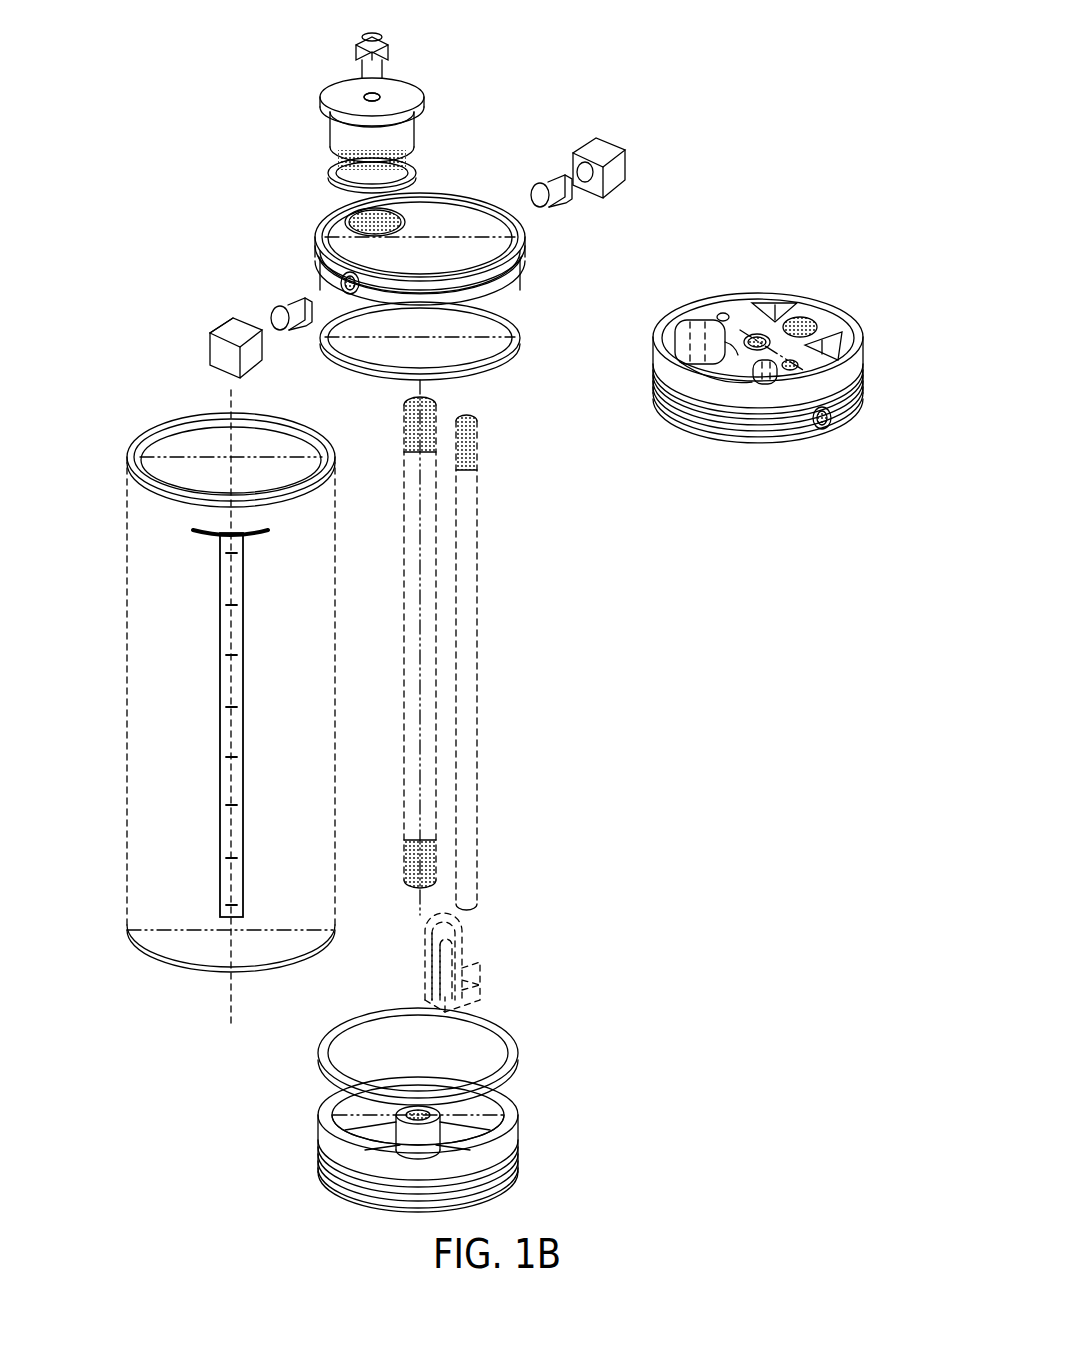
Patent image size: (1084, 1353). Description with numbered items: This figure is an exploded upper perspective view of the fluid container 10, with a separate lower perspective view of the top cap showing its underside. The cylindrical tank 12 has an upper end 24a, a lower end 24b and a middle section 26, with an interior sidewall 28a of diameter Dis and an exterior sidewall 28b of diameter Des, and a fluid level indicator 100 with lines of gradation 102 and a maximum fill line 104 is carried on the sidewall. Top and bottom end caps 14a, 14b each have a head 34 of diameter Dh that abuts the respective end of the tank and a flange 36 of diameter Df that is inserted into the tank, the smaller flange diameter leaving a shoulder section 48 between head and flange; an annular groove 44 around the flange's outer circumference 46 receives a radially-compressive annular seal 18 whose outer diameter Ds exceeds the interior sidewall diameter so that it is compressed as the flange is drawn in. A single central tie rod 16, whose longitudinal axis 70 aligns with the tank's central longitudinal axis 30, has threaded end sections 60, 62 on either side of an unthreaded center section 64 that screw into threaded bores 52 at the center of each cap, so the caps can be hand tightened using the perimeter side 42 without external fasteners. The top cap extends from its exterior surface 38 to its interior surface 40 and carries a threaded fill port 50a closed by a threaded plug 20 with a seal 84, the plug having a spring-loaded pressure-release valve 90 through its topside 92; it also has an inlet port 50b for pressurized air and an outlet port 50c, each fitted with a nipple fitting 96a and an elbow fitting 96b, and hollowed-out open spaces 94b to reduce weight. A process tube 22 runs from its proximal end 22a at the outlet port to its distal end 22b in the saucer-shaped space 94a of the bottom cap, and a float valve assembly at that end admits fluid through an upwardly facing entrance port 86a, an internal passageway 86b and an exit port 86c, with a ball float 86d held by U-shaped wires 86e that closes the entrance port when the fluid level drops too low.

The fluid container 10 is at (138, 42).
The cylindrical tank 12 is at (152, 630).
The top end cap 14a is at (473, 205).
The bottom end cap 14b is at (505, 1165).
The tie rod 16 is at (436, 665).
The annular seal 18 is at (502, 355).
The threaded plug 20 is at (402, 95).
The process tube 22 is at (467, 690).
The proximal end of process tube 22a is at (463, 443).
The distal end of process tube 22b is at (475, 898).
The upper end of tank 24a is at (200, 500).
The lower end of tank 24b is at (270, 952).
The middle section of tank 26 is at (200, 680).
The interior sidewall of tank 28a is at (175, 440).
The exterior sidewall of tank 28b is at (178, 850).
The central longitudinal axis 30 is at (230, 443).
The head 34 is at (488, 248).
The flange 36 is at (498, 300).
The exterior surface of top cap 38 is at (432, 208).
The interior surface of top cap 40 is at (727, 345).
The perimeter side 42 is at (505, 275).
The annular groove 44 is at (730, 400).
The outer circumference of flange 46 is at (835, 313).
The shoulder section 48 is at (675, 385).
The fill port 50a is at (370, 220).
The inlet port 50b is at (350, 282).
The outlet port 50c is at (718, 316).
The threaded bore 52 is at (759, 334).
The threaded end section of tie rod 60 is at (432, 405).
The threaded end section of tie rod 62 is at (463, 850).
The center section of tie rod 64 is at (435, 780).
The longitudinal axis of tie rod 70 is at (422, 620).
The seal 84 is at (322, 165).
The entrance port 86a is at (440, 993).
The internal passageway 86b is at (487, 980).
The exit port 86c is at (465, 968).
The ball float 86d is at (448, 955).
The U-shaped wires 86e is at (432, 930).
The pressure-release valve 90 is at (355, 48).
The topside of threaded plug 92 is at (362, 92).
The saucer-shaped space 94a is at (465, 1110).
The open spaces 94b is at (742, 372).
The nipple fitting 96a is at (285, 302).
The elbow fitting 96b is at (225, 338).
The fluid level indicator 100 is at (248, 672).
The lines of gradation 102 is at (230, 710).
The maximum fill line 104 is at (267, 532).
The head diameter Dh is at (485, 237).
The seal outer diameter Ds is at (405, 338).
The interior sidewall diameter Dis is at (212, 458).
The exterior sidewall diameter Des is at (175, 930).
The flange diameter Df is at (805, 372).